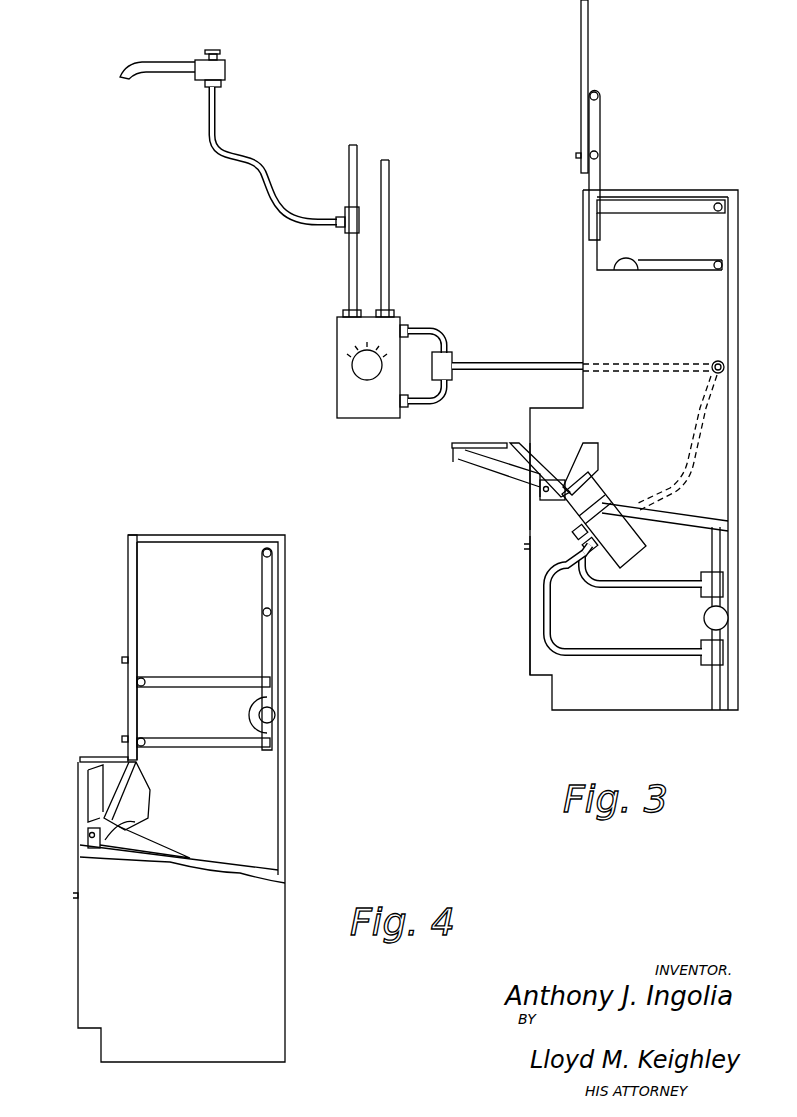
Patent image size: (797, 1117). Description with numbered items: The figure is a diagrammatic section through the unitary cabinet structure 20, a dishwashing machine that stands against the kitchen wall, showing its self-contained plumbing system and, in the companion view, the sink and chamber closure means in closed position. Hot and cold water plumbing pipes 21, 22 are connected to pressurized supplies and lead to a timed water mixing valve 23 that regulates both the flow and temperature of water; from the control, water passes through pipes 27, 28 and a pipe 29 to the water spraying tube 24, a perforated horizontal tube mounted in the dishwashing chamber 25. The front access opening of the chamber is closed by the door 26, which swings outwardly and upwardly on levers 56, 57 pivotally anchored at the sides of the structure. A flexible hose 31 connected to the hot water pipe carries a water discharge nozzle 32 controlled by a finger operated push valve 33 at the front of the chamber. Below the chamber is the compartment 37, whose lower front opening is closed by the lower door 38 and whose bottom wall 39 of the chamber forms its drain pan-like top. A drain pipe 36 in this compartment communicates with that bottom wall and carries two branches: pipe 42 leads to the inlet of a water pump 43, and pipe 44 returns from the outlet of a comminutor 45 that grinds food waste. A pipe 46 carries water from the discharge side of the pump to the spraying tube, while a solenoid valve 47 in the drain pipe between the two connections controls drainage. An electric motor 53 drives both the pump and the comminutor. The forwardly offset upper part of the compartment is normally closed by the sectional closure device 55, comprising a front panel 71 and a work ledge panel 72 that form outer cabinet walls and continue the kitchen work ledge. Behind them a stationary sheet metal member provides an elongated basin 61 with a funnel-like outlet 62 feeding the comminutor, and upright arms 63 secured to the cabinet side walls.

In FIG. 3, the unitary cabinet structure 20 is at (583, 254).
In FIG. 4, the unitary cabinet structure 20 is at (193, 535).
In FIG. 3, the hot water plumbing pipe 21 is at (349, 155).
In FIG. 3, the cold water plumbing pipe 22 is at (389, 168).
In FIG. 3, the timed water mixing valve 23 is at (337, 358).
In FIG. 3, the water spraying tube 24 is at (718, 361).
In FIG. 4, the water spraying tube 24 is at (275, 712).
In FIG. 3, the dishwashing chamber 25 is at (648, 309).
In FIG. 4, the dishwashing chamber 25 is at (182, 591).
In FIG. 3, the door 26 is at (581, 12).
In FIG. 4, the door 26 is at (128, 578).
In FIG. 3, the pipe 27 is at (438, 330).
In FIG. 3, the pipe 28 is at (423, 404).
In FIG. 3, the pipe 29 is at (520, 364).
In FIG. 3, the flexible hose 31 is at (215, 160).
In FIG. 3, the water discharge nozzle 32 is at (144, 66).
In FIG. 3, the push valve 33 is at (214, 50).
In FIG. 3, the drain pipe 36 is at (720, 546).
In FIG. 3, the compartment 37 is at (690, 618).
In FIG. 3, the lower door 38 is at (530, 612).
In FIG. 4, the lower door 38 is at (78, 932).
In FIG. 3, the bottom wall 39 is at (692, 521).
In FIG. 4, the bottom wall 39 is at (244, 868).
In FIG. 3, the pipe 42 is at (630, 588).
In FIG. 3, the water pump 43 is at (624, 550).
In FIG. 3, the pipe 44 is at (636, 656).
In FIG. 3, the comminutor 45 is at (580, 516).
In FIG. 3, the pipe 46 is at (706, 394).
In FIG. 3, the solenoid valve 47 is at (728, 618).
In FIG. 3, the electric motor 53 is at (640, 528).
In FIG. 3, the sectional closure device 55 is at (461, 464).
In FIG. 4, the sectional closure device 55 is at (72, 771).
In FIG. 3, the lever 56 is at (630, 200).
In FIG. 4, the lever 56 is at (213, 677).
In FIG. 3, the lever 57 is at (652, 265).
In FIG. 4, the lever 57 is at (225, 738).
In FIG. 4, the basin 61 is at (140, 830).
In FIG. 3, the funnel-like outlet 62 is at (590, 462).
In FIG. 3, the upright arms 63 is at (592, 447).
In FIG. 4, the upright arms 63 is at (150, 792).
In FIG. 3, the front panel 71 is at (503, 473).
In FIG. 4, the front panel 71 is at (88, 794).
In FIG. 3, the work ledge panel 72 is at (486, 443).
In FIG. 4, the work ledge panel 72 is at (95, 757).